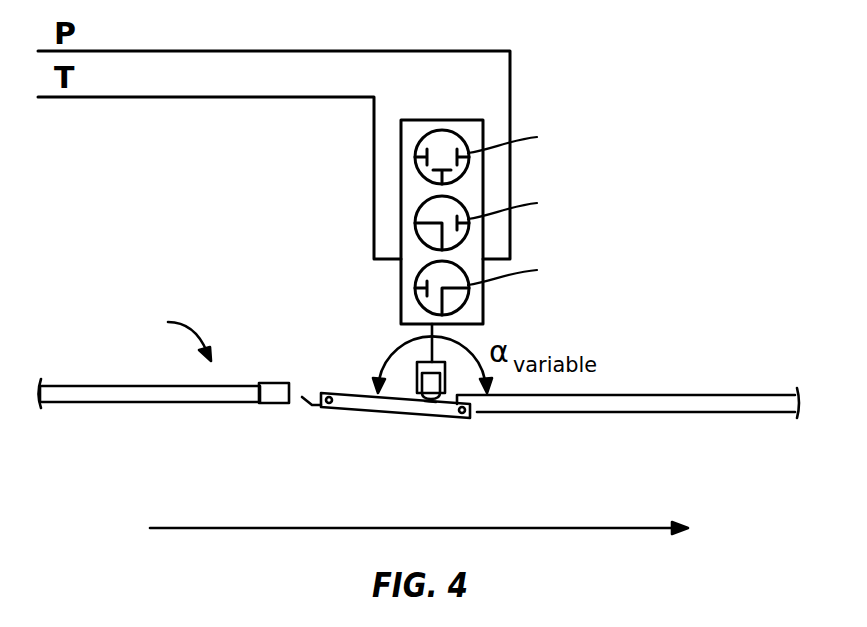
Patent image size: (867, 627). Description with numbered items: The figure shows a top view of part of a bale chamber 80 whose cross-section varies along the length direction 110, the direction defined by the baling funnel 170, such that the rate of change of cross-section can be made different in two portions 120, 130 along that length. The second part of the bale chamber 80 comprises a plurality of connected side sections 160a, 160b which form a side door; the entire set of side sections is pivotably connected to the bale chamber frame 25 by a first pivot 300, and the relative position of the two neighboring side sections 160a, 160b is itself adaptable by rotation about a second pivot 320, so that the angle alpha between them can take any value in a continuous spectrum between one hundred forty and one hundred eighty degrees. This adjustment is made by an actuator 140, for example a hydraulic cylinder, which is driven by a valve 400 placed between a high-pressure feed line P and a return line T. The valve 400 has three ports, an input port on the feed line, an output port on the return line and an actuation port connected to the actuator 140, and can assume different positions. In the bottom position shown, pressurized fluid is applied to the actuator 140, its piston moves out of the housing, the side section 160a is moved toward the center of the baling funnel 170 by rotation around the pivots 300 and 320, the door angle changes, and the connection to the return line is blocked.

The bale chamber frame 25 is at (172, 386).
The bale chamber 80 is at (170, 335).
The length direction 110 is at (419, 511).
The baling funnel 170 is at (505, 528).
The first portion 120 is at (383, 412).
The second portion 130 is at (640, 395).
The actuator 140 is at (417, 380).
The side section 160a is at (430, 413).
The side section 160b is at (667, 412).
The first pivot 300 is at (328, 408).
The second pivot 320 is at (462, 419).
The valve 400 is at (400, 298).